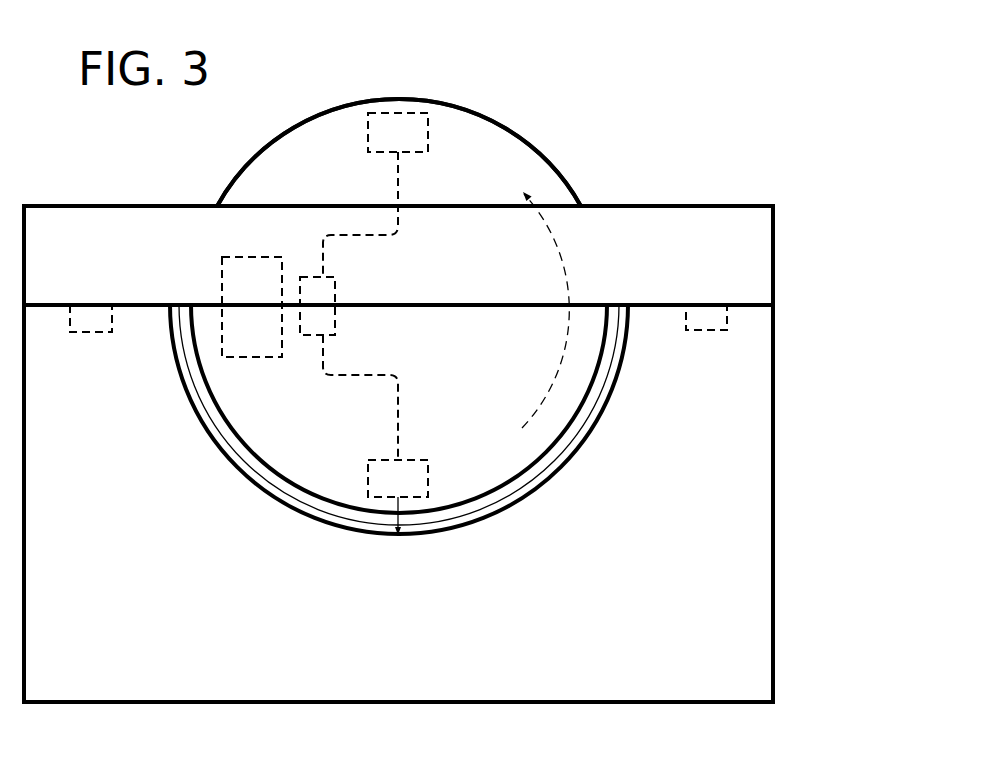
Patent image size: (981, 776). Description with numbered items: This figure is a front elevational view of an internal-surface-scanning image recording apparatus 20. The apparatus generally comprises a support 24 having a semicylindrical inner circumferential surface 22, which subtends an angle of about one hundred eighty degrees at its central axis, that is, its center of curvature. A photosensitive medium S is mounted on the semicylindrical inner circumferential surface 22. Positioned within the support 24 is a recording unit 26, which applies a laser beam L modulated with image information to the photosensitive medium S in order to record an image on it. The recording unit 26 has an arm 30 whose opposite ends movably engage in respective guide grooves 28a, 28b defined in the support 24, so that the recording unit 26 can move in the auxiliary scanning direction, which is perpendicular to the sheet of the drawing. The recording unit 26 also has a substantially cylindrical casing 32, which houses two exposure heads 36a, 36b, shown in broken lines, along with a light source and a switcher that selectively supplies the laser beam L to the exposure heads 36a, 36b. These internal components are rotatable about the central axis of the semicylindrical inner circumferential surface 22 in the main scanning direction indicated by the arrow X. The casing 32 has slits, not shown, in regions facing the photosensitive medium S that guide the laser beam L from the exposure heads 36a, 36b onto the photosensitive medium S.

The internal-surface-scanning image recording apparatus 20 is at (640, 128).
The semicylindrical inner circumferential surface 22 is at (253, 467).
The support 24 is at (748, 580).
The recording unit 26 is at (483, 468).
The guide groove 28a is at (87, 315).
The guide groove 28b is at (700, 318).
The arm 30 is at (684, 235).
The cylindrical casing 32 is at (302, 137).
The exposure head 36a is at (428, 480).
The exposure head 36b is at (410, 135).
The photosensitive medium S is at (592, 432).
The laser beam L is at (402, 519).
The main scanning direction X is at (533, 297).